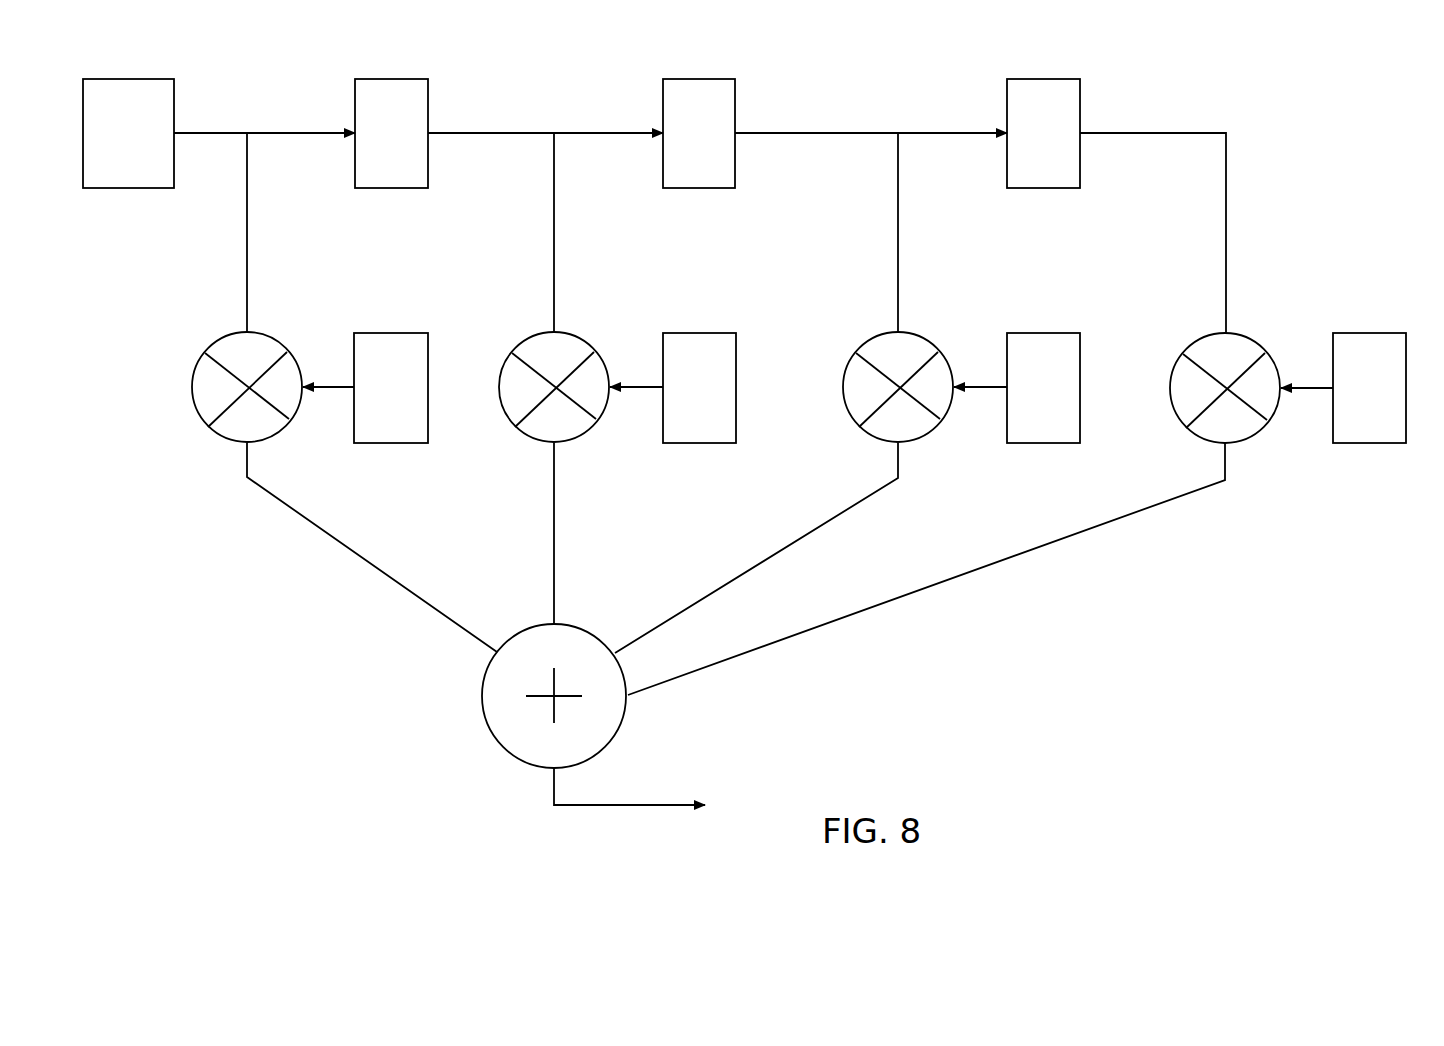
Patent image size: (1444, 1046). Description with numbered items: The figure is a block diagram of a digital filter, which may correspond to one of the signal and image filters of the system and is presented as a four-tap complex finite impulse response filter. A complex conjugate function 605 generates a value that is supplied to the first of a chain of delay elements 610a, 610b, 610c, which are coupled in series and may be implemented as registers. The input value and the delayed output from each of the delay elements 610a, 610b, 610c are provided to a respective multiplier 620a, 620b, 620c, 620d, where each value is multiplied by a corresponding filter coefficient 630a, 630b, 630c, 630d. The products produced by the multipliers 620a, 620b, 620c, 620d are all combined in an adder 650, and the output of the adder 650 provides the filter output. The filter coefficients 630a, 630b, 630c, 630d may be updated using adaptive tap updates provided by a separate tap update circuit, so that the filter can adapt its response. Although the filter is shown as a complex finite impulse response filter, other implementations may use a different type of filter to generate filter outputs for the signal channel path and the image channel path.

The complex conjugate function 605 is at (130, 188).
The delay element 610a is at (392, 188).
The delay element 610b is at (697, 188).
The delay element 610c is at (1043, 188).
The multiplier 620a is at (265, 335).
The multiplier 620b is at (580, 338).
The multiplier 620c is at (925, 338).
The multiplier 620d is at (1262, 350).
The filter coefficient 630a is at (392, 333).
The filter coefficient 630b is at (698, 333).
The filter coefficient 630c is at (1043, 333).
The filter coefficient 630d is at (1370, 443).
The adder 650 is at (482, 697).